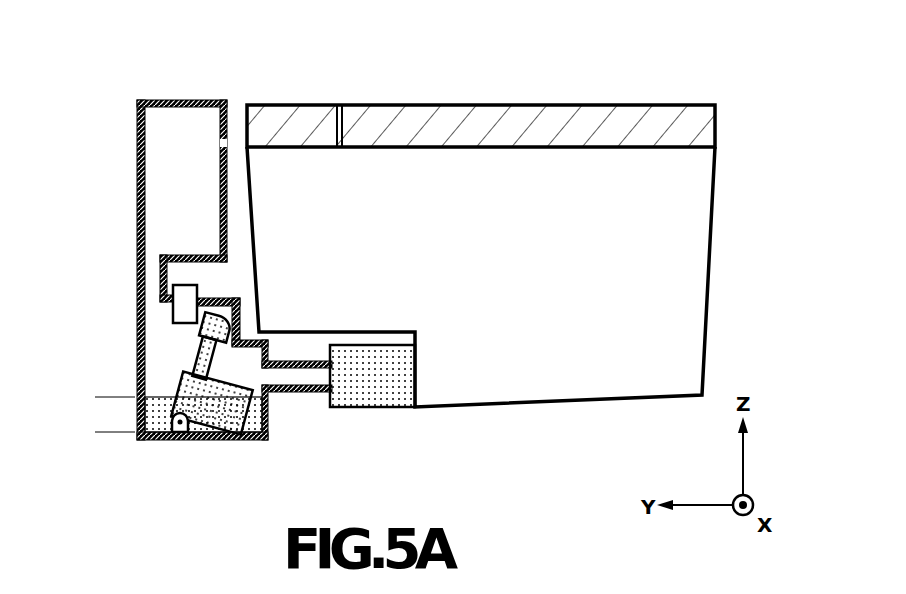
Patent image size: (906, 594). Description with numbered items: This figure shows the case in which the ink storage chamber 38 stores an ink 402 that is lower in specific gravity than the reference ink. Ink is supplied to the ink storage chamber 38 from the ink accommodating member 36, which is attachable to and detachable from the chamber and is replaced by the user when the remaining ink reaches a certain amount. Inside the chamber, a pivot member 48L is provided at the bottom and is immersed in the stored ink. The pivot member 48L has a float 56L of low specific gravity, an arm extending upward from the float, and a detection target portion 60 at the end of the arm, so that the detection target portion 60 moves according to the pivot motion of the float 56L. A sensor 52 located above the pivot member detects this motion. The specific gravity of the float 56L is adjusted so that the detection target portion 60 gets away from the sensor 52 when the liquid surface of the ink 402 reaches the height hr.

The ink accommodating member 36 is at (585, 105).
The ink storage chamber 38 is at (137, 148).
The sensor 52 is at (180, 284).
The detection target portion 60 is at (213, 320).
The pivot member 48L is at (183, 380).
The float 56L is at (221, 428).
The ink 402 is at (256, 418).
The height hr is at (103, 368).